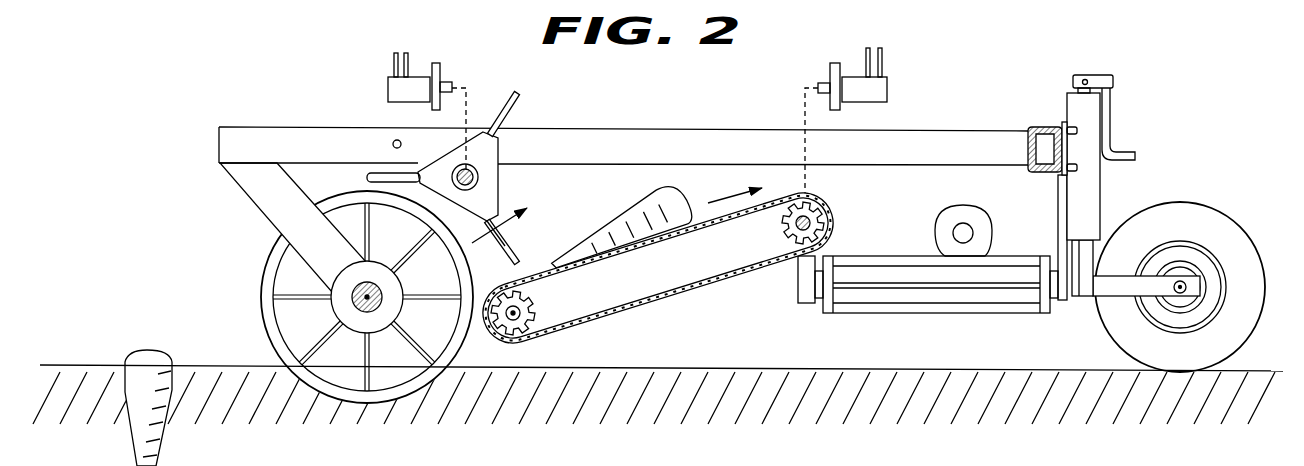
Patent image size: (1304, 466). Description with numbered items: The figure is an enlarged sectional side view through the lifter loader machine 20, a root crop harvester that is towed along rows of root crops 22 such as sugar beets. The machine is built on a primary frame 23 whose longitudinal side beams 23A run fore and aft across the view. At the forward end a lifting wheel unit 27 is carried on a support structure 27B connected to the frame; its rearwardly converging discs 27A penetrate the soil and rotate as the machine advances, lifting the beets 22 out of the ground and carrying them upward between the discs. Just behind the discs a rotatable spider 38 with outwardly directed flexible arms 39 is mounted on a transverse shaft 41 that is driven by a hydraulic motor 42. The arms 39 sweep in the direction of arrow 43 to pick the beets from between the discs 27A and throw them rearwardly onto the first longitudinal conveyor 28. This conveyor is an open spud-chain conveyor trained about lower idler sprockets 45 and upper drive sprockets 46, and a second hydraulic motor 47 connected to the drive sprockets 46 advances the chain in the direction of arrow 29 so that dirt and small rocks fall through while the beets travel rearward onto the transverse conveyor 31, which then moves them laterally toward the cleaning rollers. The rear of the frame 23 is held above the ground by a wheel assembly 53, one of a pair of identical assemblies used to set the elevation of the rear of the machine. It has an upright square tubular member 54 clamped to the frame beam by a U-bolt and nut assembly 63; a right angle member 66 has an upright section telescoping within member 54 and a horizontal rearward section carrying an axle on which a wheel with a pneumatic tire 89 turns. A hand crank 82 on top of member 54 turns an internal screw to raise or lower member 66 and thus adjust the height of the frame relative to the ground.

The lifter loader machine 20 is at (168, 120).
The root crops 22 is at (135, 392).
The primary frame 23 is at (677, 126).
The longitudinal side beams 23A is at (1011, 111).
The lifting wheel units 27 is at (248, 278).
The rearwardly converging discs 27A is at (305, 380).
The support structure 27B is at (268, 205).
The first longitudinal conveyors 28 is at (658, 268).
The arrow 29 is at (728, 196).
The transverse conveyor 31 is at (997, 315).
The rotatable spider 38 is at (442, 150).
The flexible arms 39 is at (505, 93).
The transverse shaft 41 is at (480, 180).
The hydraulic motor 42 is at (395, 83).
The arrow 43 is at (478, 246).
The lower idler sprockets 45 is at (543, 298).
The upper drive sprockets 46 is at (780, 232).
The hydraulic motor 47 is at (880, 85).
The wheel assembly 53 is at (1197, 155).
The upright tubular member 54 is at (1088, 192).
The U-bolt and nut assembly 63 is at (1047, 127).
The right angle member 66 is at (1088, 286).
The hand crank 82 is at (1113, 110).
The pneumatic tire 89 is at (1218, 220).